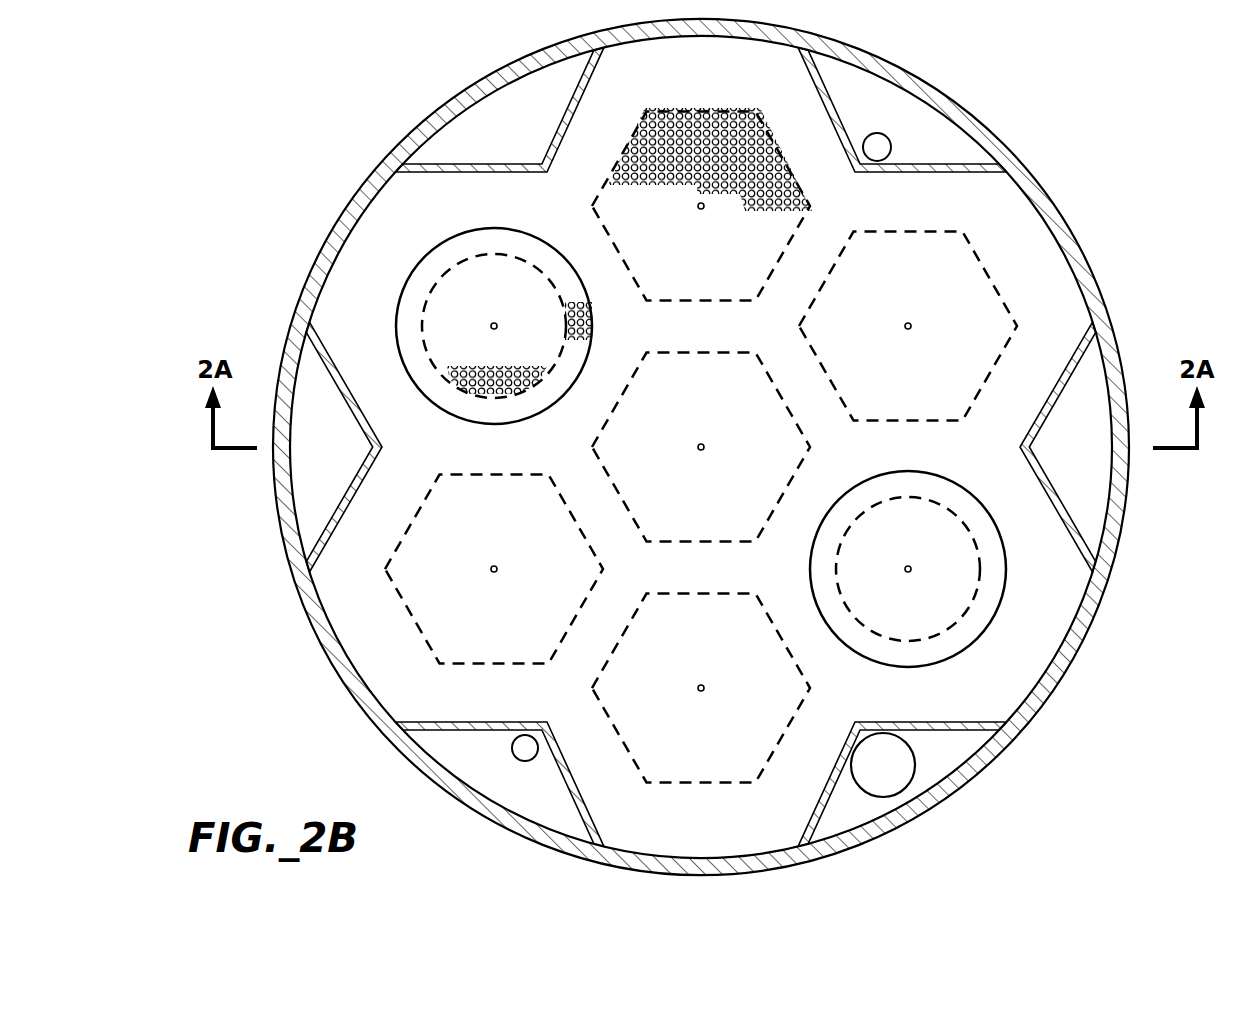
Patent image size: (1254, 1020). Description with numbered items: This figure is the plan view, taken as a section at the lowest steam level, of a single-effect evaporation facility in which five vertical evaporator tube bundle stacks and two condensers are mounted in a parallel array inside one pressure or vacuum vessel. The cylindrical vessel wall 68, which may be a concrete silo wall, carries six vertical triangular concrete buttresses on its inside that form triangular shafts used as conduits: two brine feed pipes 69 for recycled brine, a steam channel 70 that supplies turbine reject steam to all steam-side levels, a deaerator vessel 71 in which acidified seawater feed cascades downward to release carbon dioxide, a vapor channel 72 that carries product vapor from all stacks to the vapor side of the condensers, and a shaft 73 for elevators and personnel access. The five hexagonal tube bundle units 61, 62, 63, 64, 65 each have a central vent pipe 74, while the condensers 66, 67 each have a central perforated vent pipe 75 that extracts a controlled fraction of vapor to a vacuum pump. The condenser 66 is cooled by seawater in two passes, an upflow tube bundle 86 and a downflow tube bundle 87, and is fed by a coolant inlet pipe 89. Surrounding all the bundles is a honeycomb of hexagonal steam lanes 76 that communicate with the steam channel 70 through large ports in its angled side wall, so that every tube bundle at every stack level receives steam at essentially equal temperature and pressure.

The tube bundle unit 61 is at (687, 288).
The tube bundle unit 62 is at (897, 406).
The tube bundle unit 63 is at (687, 530).
The tube bundle unit 64 is at (479, 653).
The tube bundle unit 65 is at (687, 776).
The condenser 66 is at (417, 265).
The condenser 67 is at (1005, 582).
The cylindrical vessel wall 68 is at (1035, 178).
The brine feed pipe 69 is at (886, 136).
The steam channel 70 is at (1062, 460).
The deaerator vessel 71 is at (914, 758).
The vapor channel 72 is at (312, 460).
The shaft 73 is at (502, 138).
The vent pipe 74 is at (699, 207).
The vent pipe 75 is at (492, 327).
The steam lane 76 is at (687, 81).
The upflow tube bundle 86 is at (457, 301).
The downflow tube bundle 87 is at (478, 240).
The coolant inlet pipe 89 is at (592, 322).